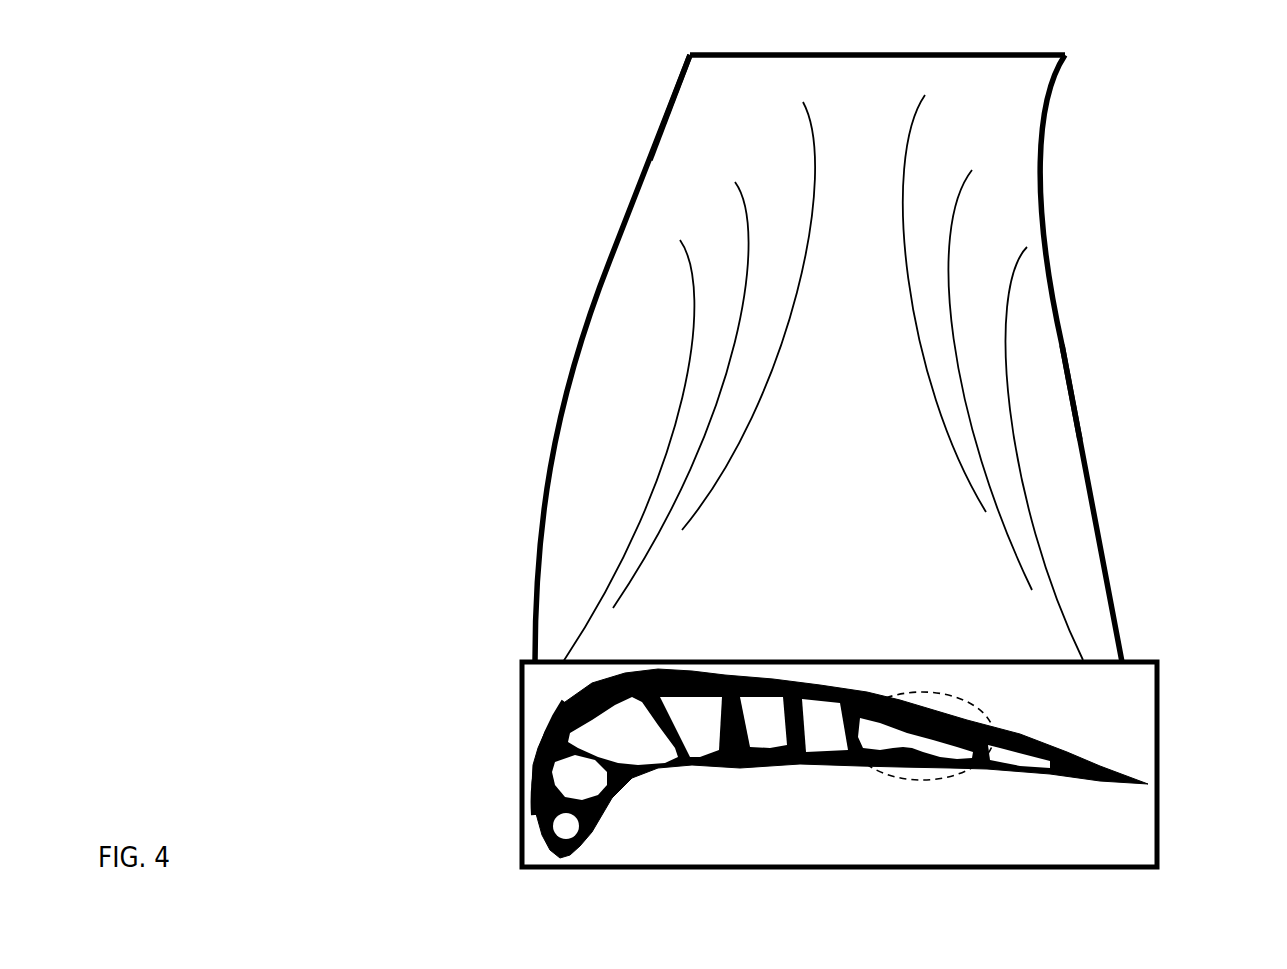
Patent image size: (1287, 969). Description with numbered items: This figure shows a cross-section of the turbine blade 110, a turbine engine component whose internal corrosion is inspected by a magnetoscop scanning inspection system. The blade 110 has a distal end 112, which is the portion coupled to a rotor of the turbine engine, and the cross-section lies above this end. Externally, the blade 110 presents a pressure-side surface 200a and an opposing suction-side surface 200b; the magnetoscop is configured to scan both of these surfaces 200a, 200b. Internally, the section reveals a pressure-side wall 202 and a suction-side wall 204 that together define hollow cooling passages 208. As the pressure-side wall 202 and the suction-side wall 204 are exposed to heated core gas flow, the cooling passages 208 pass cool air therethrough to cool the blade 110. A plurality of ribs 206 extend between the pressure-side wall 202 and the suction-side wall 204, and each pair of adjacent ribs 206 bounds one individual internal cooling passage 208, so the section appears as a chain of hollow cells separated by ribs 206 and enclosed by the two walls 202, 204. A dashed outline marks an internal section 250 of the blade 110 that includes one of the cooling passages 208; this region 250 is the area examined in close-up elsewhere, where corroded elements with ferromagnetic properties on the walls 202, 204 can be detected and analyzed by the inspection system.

The turbine blade 110 is at (570, 335).
The distal end 112 is at (1142, 660).
The pressure-side surface 200a is at (665, 172).
The suction-side surface 200b is at (1063, 352).
The pressure-side wall 202 is at (692, 782).
The suction-side wall 204 is at (530, 730).
The ribs 206 is at (641, 727).
The cooling passages 208 is at (638, 755).
The internal section 250 is at (991, 706).